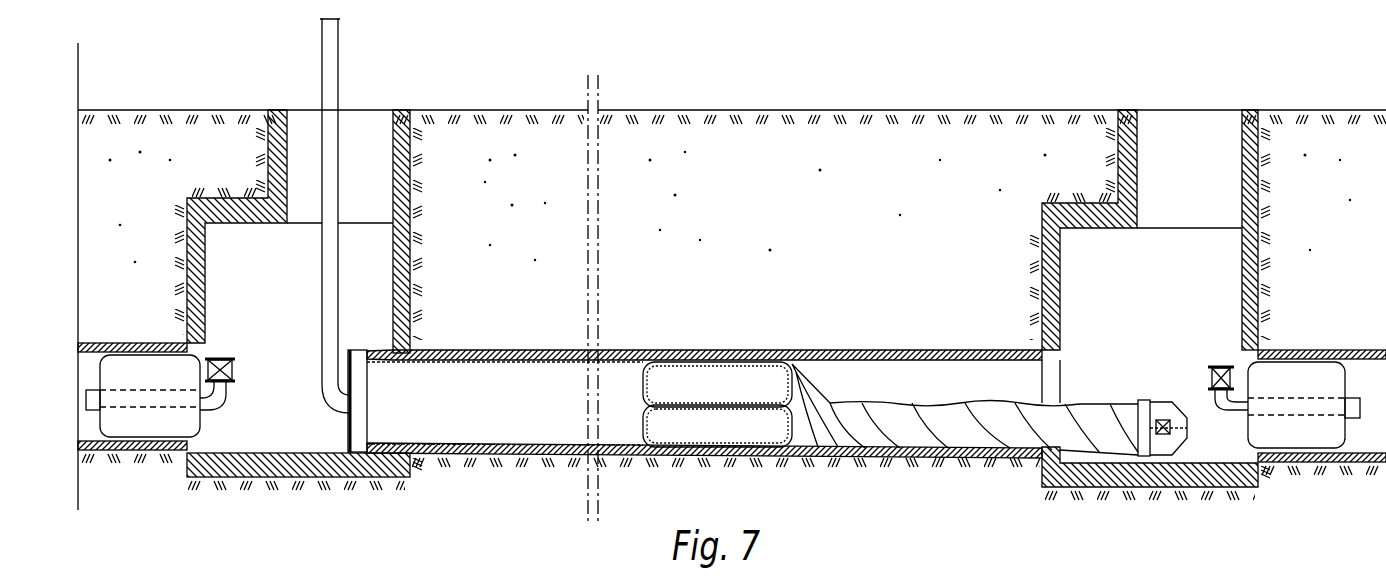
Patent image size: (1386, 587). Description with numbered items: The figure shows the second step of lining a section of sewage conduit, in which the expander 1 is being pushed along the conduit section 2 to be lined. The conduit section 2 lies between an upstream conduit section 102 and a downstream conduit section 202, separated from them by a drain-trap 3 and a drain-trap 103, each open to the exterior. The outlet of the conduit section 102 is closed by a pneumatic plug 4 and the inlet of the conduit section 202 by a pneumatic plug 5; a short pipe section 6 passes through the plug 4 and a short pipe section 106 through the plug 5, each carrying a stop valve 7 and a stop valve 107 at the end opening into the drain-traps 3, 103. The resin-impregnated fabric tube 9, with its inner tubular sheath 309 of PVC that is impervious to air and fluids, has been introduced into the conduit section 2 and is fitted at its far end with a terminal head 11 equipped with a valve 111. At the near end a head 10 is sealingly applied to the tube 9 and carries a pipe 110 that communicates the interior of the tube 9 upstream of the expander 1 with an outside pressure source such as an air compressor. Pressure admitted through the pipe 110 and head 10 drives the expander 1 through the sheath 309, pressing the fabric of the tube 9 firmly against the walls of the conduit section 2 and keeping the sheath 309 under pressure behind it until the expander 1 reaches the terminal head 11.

The expander 1 is at (742, 375).
The conduit section 2 is at (449, 348).
The drain-trap 3 is at (205, 303).
The pneumatic plug 4 is at (128, 440).
The pneumatic plug 5 is at (1305, 450).
The short pipe section 6 is at (212, 400).
The stop valve 7 is at (235, 370).
The resin-impregnated fabric tube 9 is at (552, 348).
The head 10 is at (348, 430).
The terminal head 11 is at (1160, 448).
The conduit section 102 is at (112, 341).
The drain-trap 103 is at (1062, 270).
The short pipe section 106 is at (1222, 462).
The stop valve 107 is at (1221, 366).
The pipe 110 is at (322, 256).
The valve 111 is at (1153, 405).
The conduit section 202 is at (1341, 350).
The tubular sheath 309 is at (483, 362).